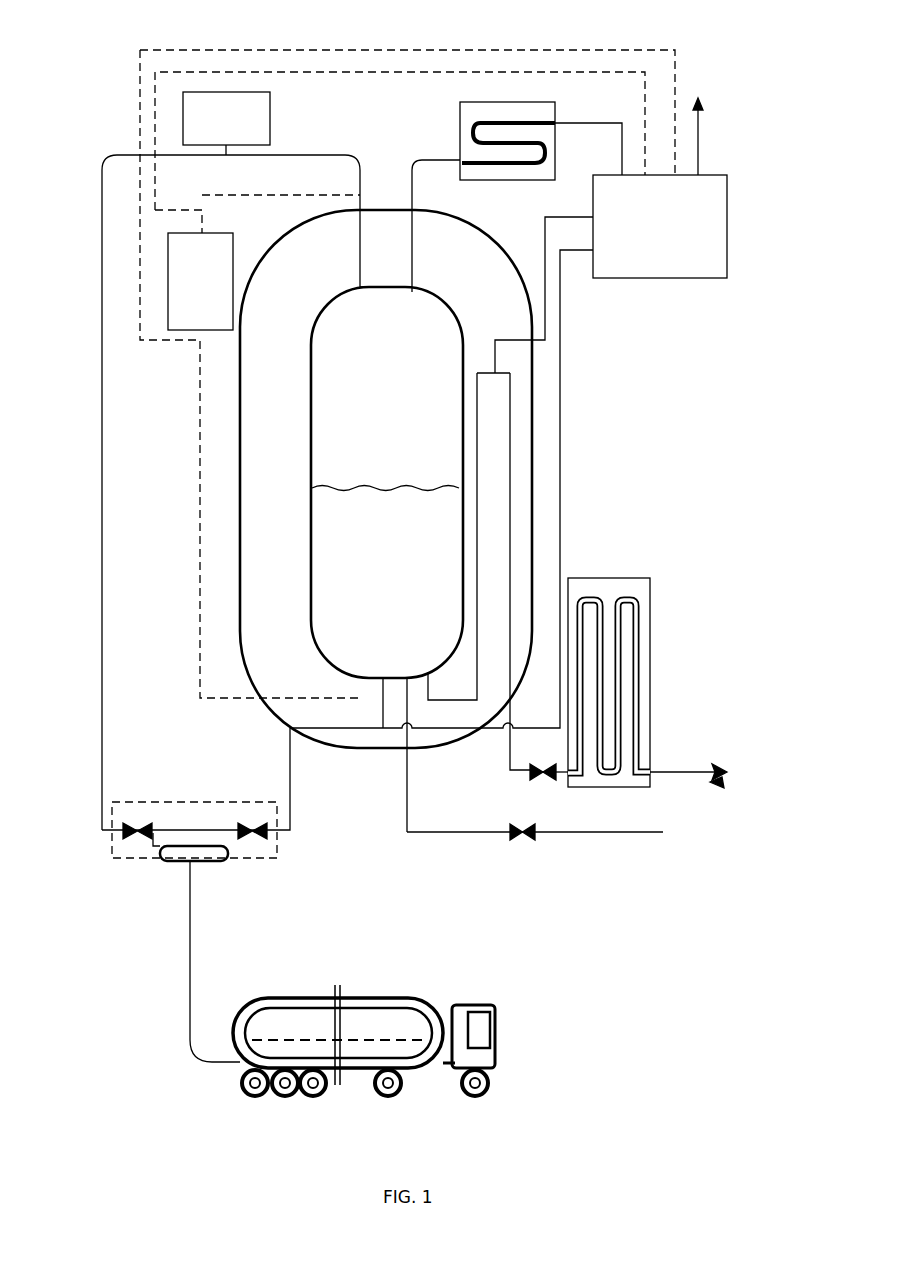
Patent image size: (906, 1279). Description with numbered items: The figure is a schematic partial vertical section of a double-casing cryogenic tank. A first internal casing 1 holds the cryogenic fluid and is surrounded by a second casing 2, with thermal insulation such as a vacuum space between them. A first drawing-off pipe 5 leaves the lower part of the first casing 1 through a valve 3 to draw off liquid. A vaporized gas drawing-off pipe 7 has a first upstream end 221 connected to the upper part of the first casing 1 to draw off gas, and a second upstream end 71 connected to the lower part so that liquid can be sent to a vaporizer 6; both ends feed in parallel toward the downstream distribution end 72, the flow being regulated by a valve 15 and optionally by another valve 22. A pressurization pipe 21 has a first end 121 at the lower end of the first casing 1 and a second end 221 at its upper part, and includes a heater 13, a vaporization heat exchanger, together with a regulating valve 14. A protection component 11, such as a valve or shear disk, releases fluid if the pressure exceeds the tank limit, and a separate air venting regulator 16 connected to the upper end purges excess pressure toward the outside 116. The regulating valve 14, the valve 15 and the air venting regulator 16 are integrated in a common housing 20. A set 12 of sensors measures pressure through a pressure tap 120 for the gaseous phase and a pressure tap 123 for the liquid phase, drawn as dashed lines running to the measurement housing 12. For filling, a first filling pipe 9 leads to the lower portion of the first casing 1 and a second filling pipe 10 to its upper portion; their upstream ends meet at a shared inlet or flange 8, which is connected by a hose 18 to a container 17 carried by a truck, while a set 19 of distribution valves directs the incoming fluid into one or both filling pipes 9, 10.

The first internal casing 1 is at (440, 292).
The second casing 2 is at (463, 377).
The valve 3 is at (530, 822).
The first drawing-off pipe 5 is at (608, 832).
The vaporizer 6 is at (615, 577).
The vaporized gas drawing-off pipe 7 is at (675, 770).
The shared inlet or flange 8 is at (207, 863).
The first filling pipe 9 is at (292, 812).
The second filling pipe 10 is at (102, 717).
The protection component 11 is at (237, 131).
The set of one or more sensors 12 is at (211, 292).
The heater 13 is at (532, 98).
The regulating valve 14 is at (598, 295).
The valve 15 is at (576, 325).
The air venting regulator 16 is at (425, 564).
The container 17 is at (298, 1020).
The hose 18 is at (197, 982).
The set of one or more distribution valves 19 is at (143, 857).
The housing 20 is at (732, 208).
The pressurization pipe 21 is at (627, 138).
The other valve 22 is at (547, 777).
The second upstream end 71 is at (450, 673).
The downstream distribution end 72 is at (707, 787).
The outside 116 is at (705, 158).
The pressure tap for the gaseous phase 120 is at (195, 200).
The first end 121 is at (380, 680).
The pressure tap for the liquid phase 123 is at (195, 348).
The second end / first upstream end 221 is at (423, 283).